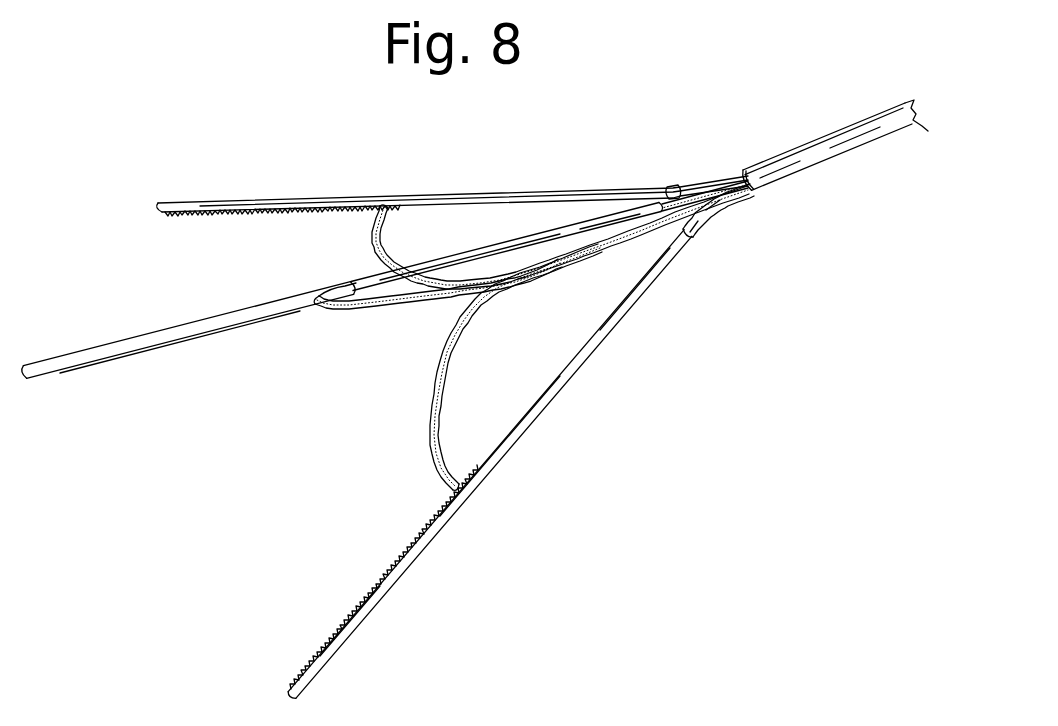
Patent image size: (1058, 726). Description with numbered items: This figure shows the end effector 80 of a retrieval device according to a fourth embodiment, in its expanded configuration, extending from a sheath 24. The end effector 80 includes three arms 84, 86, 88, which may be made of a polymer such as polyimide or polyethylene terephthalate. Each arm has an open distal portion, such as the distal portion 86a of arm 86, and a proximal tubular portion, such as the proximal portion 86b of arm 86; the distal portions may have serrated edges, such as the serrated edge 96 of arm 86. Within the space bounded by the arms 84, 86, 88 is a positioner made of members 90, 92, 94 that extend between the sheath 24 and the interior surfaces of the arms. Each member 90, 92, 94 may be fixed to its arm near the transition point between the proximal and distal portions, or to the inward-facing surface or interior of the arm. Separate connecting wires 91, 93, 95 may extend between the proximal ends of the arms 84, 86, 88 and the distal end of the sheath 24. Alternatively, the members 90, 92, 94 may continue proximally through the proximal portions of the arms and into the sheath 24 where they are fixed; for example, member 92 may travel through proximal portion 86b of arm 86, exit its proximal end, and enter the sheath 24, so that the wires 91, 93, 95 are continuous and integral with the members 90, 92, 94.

The end effector 80 is at (98, 172).
The sheath 24 is at (822, 148).
The arm 84 is at (266, 201).
The arm 86 is at (138, 342).
The distal portion 86a is at (242, 315).
The proximal portion 86b is at (490, 250).
The arm 88 is at (420, 548).
The member 90 is at (376, 238).
The connecting wire 91 is at (732, 181).
The member 92 is at (370, 310).
The connecting wire 93 is at (672, 188).
The member 94 is at (432, 428).
The connecting wire 95 is at (716, 218).
The serrated edge 96 is at (84, 366).